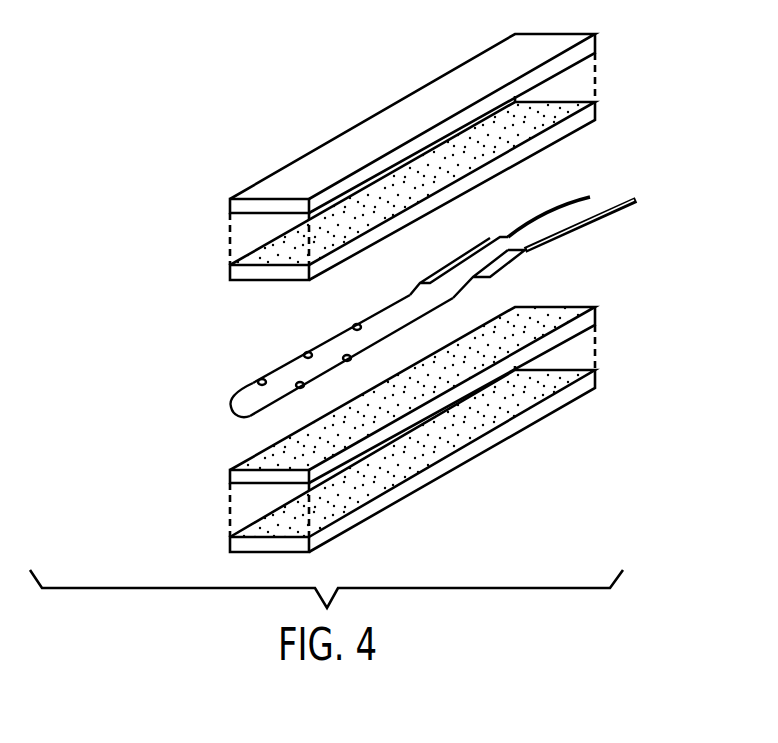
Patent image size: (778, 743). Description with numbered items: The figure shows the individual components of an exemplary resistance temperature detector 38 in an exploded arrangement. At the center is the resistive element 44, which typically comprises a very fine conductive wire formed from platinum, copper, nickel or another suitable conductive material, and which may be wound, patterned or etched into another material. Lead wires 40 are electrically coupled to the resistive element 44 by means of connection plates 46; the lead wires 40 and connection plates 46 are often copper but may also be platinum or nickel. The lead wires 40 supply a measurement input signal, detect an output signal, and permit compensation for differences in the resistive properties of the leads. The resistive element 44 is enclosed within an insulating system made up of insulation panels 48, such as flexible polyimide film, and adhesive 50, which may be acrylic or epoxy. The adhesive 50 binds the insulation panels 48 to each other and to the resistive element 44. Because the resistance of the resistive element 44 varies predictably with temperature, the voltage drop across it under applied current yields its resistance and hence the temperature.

The resistance temperature detector 38 is at (397, 276).
The lead wires 40 is at (618, 198).
The resistive element 44 is at (408, 301).
The connection plates 46 is at (492, 278).
The insulation panels 48 is at (360, 200).
The adhesive 50 is at (296, 247).